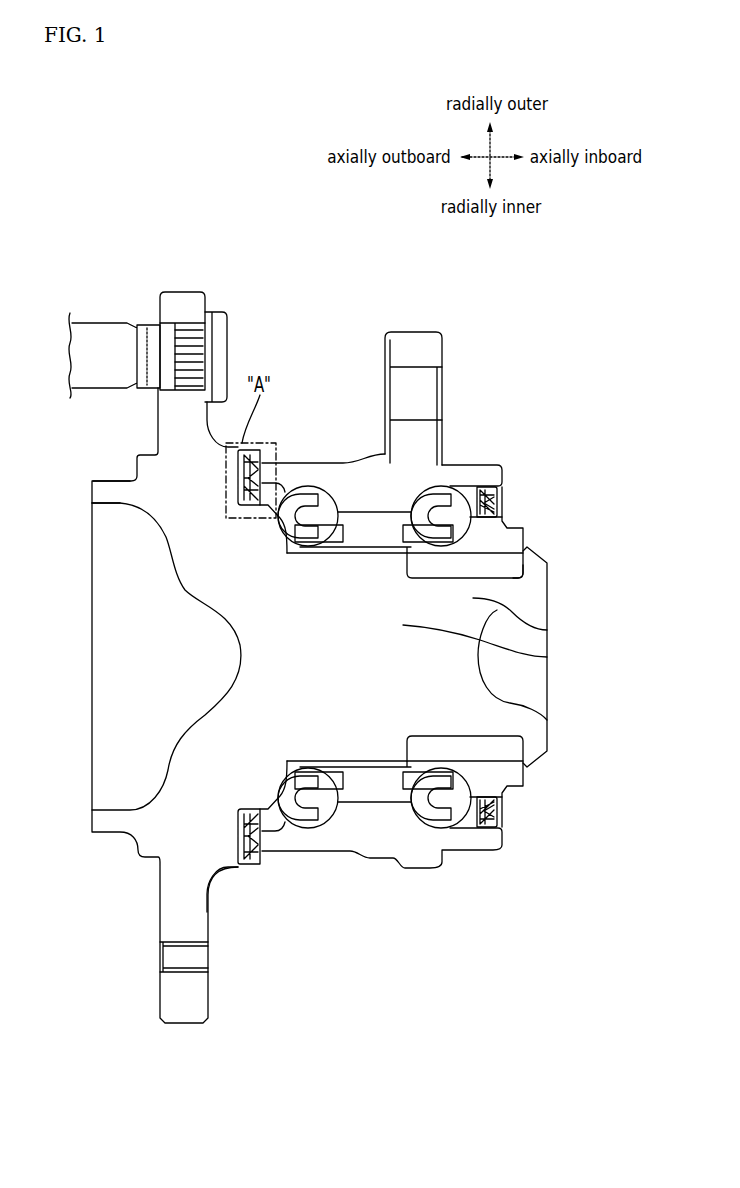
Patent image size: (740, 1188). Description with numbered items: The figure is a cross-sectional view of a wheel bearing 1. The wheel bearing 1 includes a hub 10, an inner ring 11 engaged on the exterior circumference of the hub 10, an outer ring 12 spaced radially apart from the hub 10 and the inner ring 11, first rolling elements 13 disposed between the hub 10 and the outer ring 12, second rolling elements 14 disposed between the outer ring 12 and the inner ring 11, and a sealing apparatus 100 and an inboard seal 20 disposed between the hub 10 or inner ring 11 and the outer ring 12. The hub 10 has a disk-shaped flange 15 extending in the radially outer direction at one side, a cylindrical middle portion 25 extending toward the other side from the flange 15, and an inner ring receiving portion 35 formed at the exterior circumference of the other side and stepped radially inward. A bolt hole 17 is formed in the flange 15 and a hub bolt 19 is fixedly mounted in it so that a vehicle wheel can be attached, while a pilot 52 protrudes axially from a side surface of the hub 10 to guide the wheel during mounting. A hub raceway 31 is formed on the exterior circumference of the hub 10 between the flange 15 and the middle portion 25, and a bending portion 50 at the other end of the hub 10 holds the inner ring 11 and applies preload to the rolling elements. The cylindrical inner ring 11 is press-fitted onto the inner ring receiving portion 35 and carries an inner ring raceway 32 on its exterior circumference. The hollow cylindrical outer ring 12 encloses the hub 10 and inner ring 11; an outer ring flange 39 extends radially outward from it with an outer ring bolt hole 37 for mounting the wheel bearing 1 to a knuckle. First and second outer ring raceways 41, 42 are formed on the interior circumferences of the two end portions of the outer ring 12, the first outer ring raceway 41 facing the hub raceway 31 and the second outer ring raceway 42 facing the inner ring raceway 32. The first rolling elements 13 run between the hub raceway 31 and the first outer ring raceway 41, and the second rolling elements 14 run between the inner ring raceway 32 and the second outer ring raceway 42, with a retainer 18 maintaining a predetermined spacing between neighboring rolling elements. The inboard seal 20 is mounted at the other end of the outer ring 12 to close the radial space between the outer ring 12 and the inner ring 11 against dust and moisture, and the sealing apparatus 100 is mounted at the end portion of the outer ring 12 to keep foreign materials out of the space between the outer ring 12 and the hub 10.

The wheel bearing 1 is at (308, 322).
The hub 10 is at (177, 590).
The inner ring 11 is at (515, 537).
The outer ring 12 is at (343, 487).
The first rolling elements 13 is at (318, 820).
The second rolling elements 14 is at (427, 820).
The flange 15 is at (158, 422).
The bolt hole 17 is at (158, 318).
The retainer 18 is at (388, 783).
The hub bolt 19 is at (215, 310).
The inboard seal 20 is at (487, 485).
The middle portion 25 is at (547, 657).
The hub raceway 31 is at (275, 795).
The inner ring raceway 32 is at (485, 830).
The inner ring receiving portion 35 is at (547, 630).
The outer ring bolt hole 37 is at (433, 385).
The outer ring flange 39 is at (413, 330).
The first outer ring raceway 41 is at (303, 483).
The second outer ring raceway 42 is at (445, 490).
The bending portion 50 is at (528, 580).
The pilot 52 is at (103, 490).
The sealing apparatus 100 is at (272, 437).